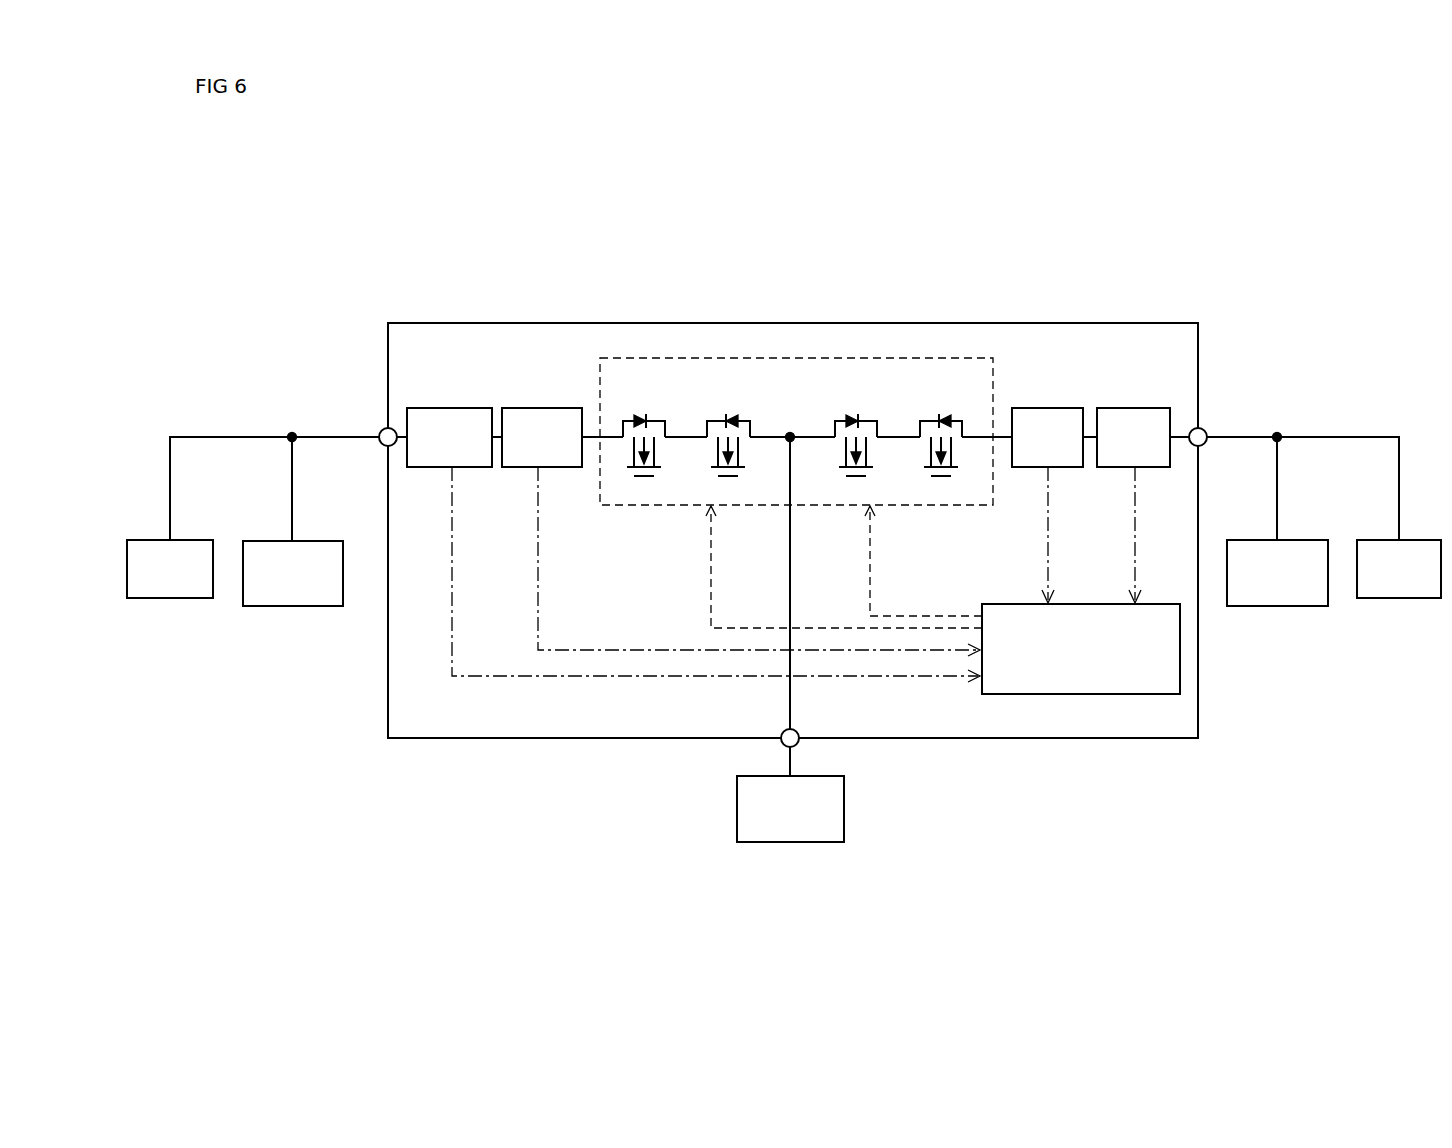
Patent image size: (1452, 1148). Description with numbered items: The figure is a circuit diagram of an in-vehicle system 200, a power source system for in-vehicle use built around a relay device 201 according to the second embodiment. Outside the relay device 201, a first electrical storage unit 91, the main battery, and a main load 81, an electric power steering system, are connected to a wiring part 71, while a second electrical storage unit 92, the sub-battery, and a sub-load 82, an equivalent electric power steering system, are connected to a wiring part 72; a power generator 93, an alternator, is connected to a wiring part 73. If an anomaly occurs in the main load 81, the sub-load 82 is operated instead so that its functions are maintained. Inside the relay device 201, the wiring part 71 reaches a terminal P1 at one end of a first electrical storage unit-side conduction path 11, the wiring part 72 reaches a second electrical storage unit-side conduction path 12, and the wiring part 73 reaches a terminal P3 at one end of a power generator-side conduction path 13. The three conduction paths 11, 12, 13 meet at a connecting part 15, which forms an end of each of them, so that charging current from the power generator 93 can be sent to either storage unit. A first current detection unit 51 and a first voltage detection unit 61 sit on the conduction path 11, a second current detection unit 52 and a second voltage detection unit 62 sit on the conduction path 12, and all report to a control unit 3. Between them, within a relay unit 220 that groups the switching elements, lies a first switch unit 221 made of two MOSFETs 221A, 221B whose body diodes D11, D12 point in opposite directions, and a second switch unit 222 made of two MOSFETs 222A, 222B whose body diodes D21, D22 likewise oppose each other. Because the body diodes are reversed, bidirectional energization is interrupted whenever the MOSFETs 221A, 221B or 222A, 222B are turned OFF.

The in-vehicle system 200 is at (1264, 298).
The relay device 201 is at (1118, 323).
The control unit 3 is at (1070, 603).
The first electrical storage unit-side conduction path 11 is at (404, 433).
The second electrical storage unit-side conduction path 12 is at (1002, 433).
The power generator-side conduction path 13 is at (793, 492).
The connecting part 15 is at (789, 441).
The first current detection unit 51 is at (527, 468).
The second current detection unit 52 is at (1033, 468).
The first voltage detection unit 61 is at (437, 468).
The second voltage detection unit 62 is at (1123, 468).
The wiring part 71 is at (327, 436).
The wiring part 72 is at (1238, 436).
The wiring part 73 is at (793, 760).
The main load 81 is at (183, 599).
The sub-load 82 is at (1402, 598).
The first electrical storage unit 91 is at (296, 607).
The second electrical storage unit 92 is at (1277, 606).
The power generator 93 is at (797, 843).
The terminal P1 is at (382, 444).
The terminal P3 is at (798, 731).
The switch unit 220 is at (690, 480).
The first switch unit 221 is at (708, 351).
The MOSFET 221A is at (750, 372).
The MOSFET 221B is at (663, 372).
The second switch unit 222 is at (905, 351).
The MOSFET 222A is at (860, 372).
The MOSFET 222B is at (952, 372).
The body diode D11 is at (732, 418).
The body diode D12 is at (663, 403).
The body diode D21 is at (866, 398).
The body diode D22 is at (962, 397).